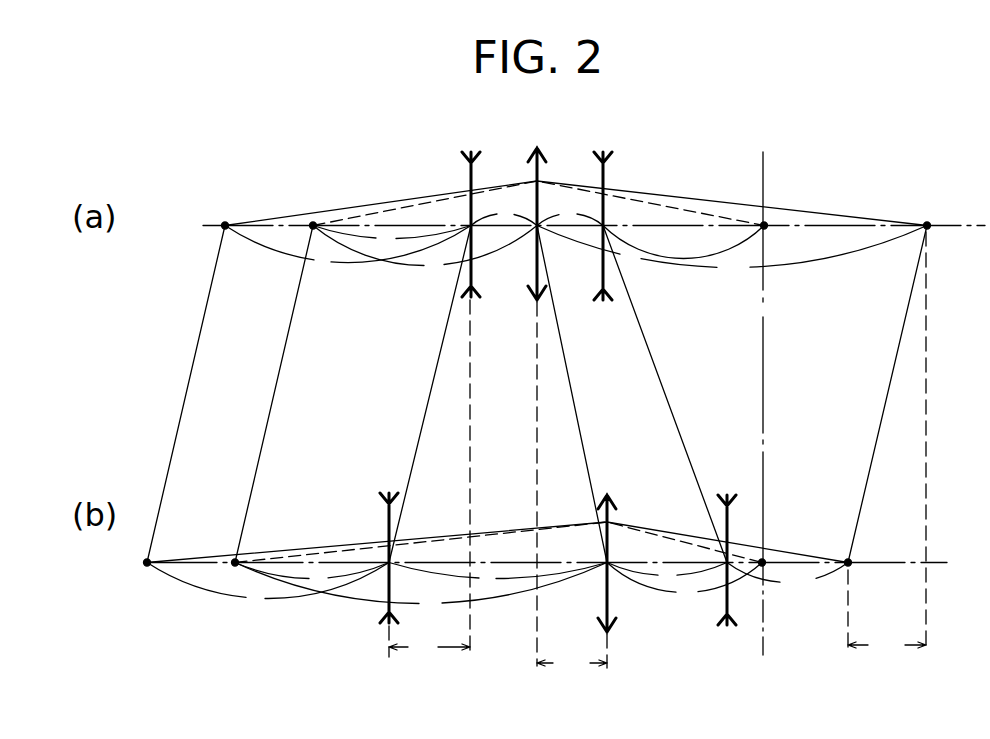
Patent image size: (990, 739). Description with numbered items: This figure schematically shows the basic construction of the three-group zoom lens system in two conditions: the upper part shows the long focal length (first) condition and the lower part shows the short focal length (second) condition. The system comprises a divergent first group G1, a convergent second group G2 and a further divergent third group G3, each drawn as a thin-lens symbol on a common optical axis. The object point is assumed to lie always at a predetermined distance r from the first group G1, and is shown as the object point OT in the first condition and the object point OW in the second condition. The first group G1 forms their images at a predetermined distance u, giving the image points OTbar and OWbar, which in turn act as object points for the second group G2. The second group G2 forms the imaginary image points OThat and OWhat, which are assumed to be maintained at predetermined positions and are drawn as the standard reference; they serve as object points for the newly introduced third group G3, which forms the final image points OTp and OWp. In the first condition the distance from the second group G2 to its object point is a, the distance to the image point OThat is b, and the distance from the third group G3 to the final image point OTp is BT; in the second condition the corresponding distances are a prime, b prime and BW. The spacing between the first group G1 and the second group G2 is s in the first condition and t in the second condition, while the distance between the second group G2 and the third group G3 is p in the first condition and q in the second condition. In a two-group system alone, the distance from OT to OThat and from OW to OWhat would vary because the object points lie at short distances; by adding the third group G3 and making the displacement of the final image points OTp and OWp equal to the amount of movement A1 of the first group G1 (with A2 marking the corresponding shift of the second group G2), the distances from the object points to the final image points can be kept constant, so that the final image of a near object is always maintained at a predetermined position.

The first group G1 is at (428, 370).
The second group G2 is at (572, 375).
The third group G3 is at (665, 371).
The amount of movement of the first group A1 is at (657, 646).
The axial shift amount of second lens group A2 is at (572, 665).
The distance from object point to first group r is at (309, 419).
The distance from first group to its image point u is at (353, 407).
The distance from second group to object point in the first condition a is at (421, 420).
The spacing between first group and second group in the first condition s is at (504, 213).
The distance between second group and third group in the first condition p is at (570, 211).
The spacing between first group and second group in the second condition t is at (498, 578).
The distance between second group and third group in the second condition q is at (667, 573).
The distance from second group to image point in the first condition b is at (683, 417).
The distance from third group to final image point in the first condition BT is at (732, 255).
The distance from third group to final image point in the second condition BW is at (787, 580).
The object point in the first condition OT is at (225, 223).
The image point formed by the first group in the first condition OTbar is at (318, 172).
The imaginary image point formed by the second group in the first condition OThat is at (767, 229).
The final image point in the first condition OTp is at (927, 223).
The object point in the second condition OW is at (149, 559).
The image point formed by the first group in the second condition OWbar is at (219, 503).
The imaginary image point formed by the second group in the second condition OWhat is at (789, 506).
The final image point in the second condition OWp is at (847, 559).